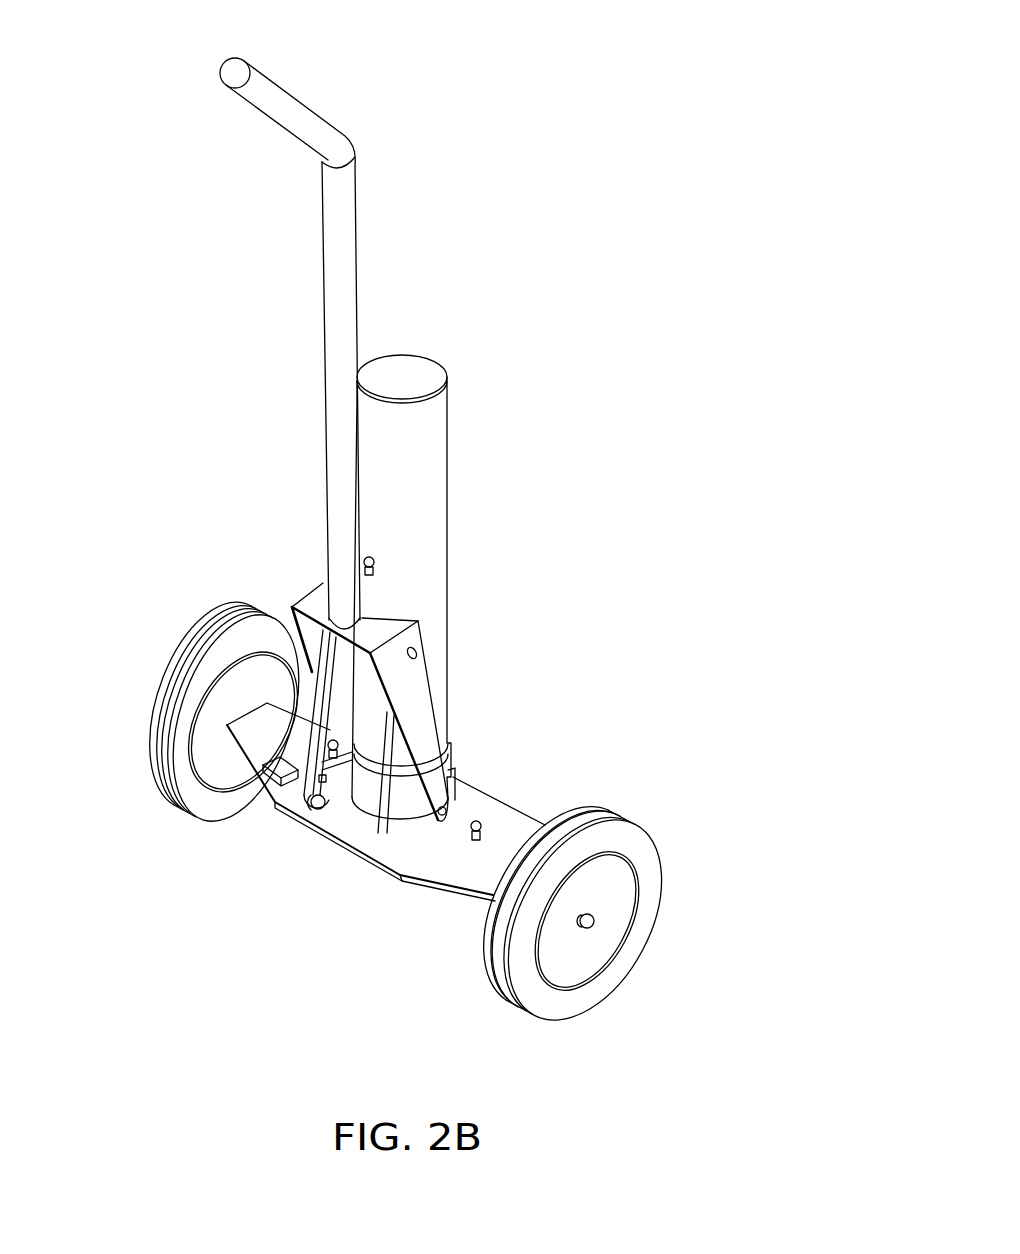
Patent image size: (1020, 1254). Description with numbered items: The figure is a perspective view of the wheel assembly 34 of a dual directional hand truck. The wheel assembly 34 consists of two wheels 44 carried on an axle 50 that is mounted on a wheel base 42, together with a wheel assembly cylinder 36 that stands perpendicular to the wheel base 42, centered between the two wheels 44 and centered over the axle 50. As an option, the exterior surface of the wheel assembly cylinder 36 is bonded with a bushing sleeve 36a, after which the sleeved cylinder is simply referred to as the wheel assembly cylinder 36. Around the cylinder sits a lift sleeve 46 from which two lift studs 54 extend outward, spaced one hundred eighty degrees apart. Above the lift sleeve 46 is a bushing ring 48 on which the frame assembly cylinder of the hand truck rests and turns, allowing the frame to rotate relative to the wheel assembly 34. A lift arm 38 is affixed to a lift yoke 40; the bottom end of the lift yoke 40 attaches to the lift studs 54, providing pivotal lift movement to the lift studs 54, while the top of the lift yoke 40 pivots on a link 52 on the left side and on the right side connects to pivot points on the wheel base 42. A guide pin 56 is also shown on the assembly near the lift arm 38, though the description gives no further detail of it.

The wheel assembly 34 is at (503, 92).
The wheel assembly cylinder 36 is at (437, 458).
The bushing sleeve 36a is at (433, 513).
The lift arm 38 is at (335, 355).
The lift yoke 40 is at (315, 600).
The wheel base 42 is at (453, 865).
The wheel 44 is at (238, 655).
The lift sleeve 46 is at (400, 835).
The bushing ring 48 is at (335, 803).
The axle 50 is at (593, 923).
The link 52 is at (412, 815).
The lift stud 54 is at (447, 802).
The guide pin 56 is at (367, 560).